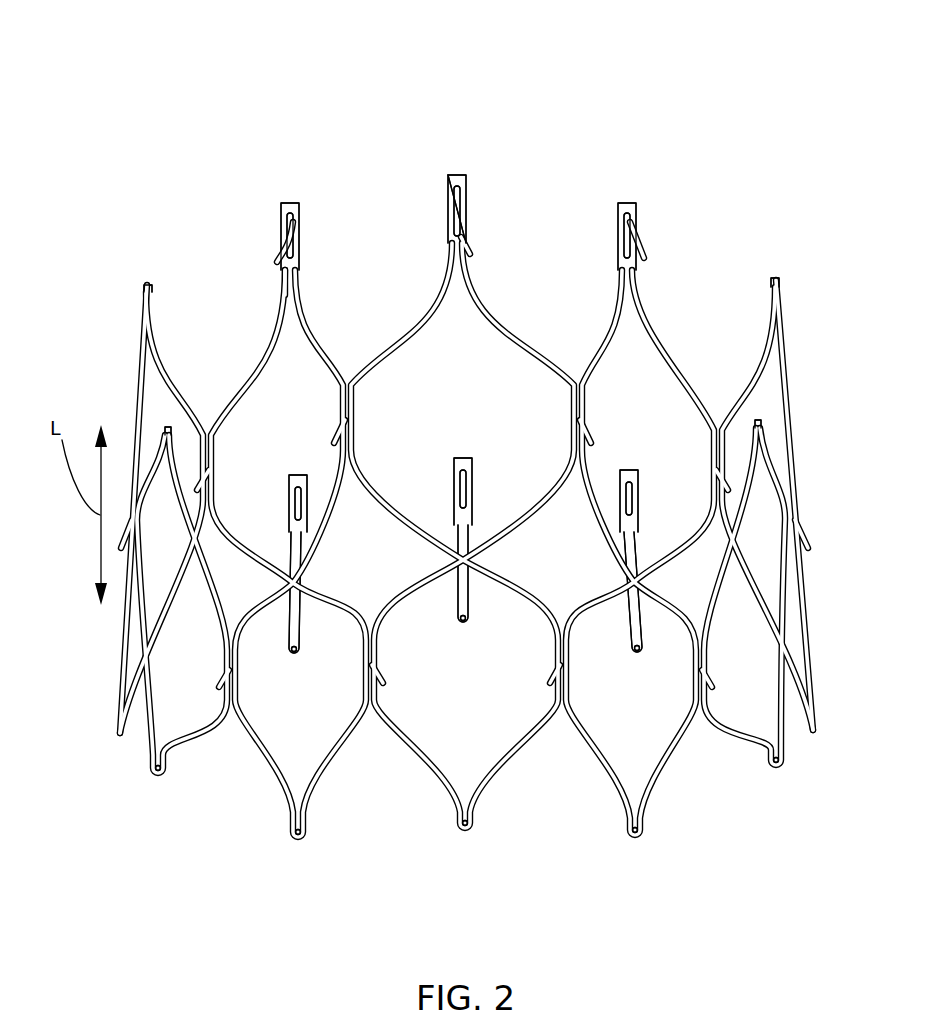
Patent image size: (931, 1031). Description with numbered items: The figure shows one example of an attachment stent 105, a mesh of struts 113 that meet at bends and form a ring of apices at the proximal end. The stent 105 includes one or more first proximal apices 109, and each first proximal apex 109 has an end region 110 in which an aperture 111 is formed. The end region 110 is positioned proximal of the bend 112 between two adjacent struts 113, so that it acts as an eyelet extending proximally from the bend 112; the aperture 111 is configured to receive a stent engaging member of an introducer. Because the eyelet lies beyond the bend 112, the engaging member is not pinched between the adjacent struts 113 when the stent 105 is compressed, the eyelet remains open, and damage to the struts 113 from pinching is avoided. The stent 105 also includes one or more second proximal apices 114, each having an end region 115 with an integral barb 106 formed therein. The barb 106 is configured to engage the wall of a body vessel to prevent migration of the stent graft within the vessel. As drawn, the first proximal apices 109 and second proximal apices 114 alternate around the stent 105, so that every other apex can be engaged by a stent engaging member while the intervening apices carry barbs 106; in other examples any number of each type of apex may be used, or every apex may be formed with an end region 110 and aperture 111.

The attachment stent 105 is at (466, 438).
The integral barb 106 is at (277, 262).
The first proximal apex 109 is at (458, 177).
The end region 110 is at (448, 178).
The aperture 111 is at (450, 223).
The bend 112 is at (466, 232).
The struts 113 is at (430, 302).
The second proximal apex 114 is at (280, 200).
The end region 115 is at (283, 272).